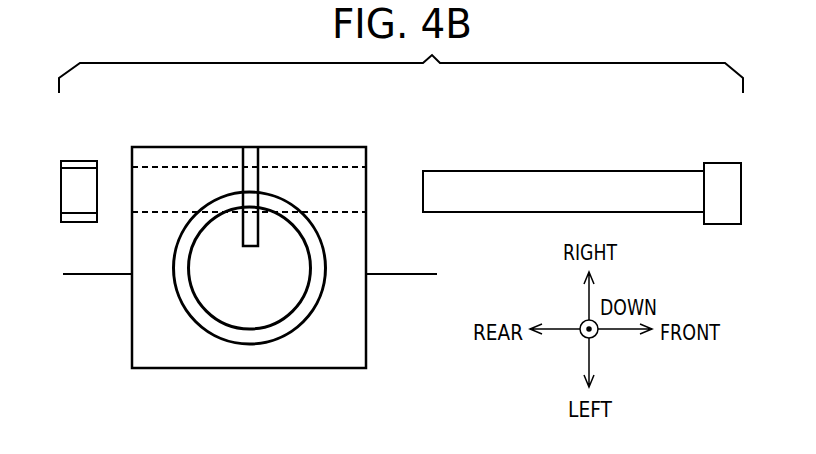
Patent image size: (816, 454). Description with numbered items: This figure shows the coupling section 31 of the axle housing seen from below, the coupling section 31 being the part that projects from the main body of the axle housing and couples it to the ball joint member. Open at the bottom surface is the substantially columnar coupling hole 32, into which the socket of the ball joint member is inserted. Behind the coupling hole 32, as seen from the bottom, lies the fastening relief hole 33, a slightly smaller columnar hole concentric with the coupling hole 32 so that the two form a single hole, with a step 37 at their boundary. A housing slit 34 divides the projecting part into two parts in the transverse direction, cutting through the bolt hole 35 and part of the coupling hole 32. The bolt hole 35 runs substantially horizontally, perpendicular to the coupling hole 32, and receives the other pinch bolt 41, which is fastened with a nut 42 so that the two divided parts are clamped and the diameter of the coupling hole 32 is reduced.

The coupling section 31 is at (382, 148).
The coupling hole 32 is at (275, 328).
The fastening relief hole 33 is at (277, 295).
The housing slit 34 is at (248, 158).
The bolt hole 35 is at (183, 188).
The step 37 is at (207, 312).
The other pinch bolt 41 is at (512, 187).
The nut 42 is at (76, 177).